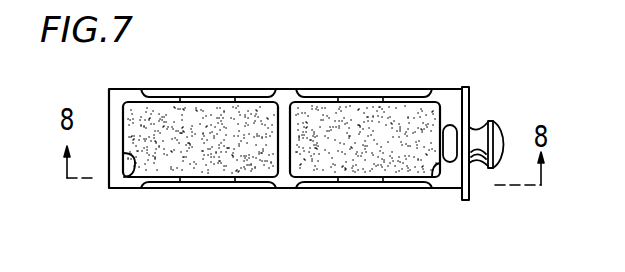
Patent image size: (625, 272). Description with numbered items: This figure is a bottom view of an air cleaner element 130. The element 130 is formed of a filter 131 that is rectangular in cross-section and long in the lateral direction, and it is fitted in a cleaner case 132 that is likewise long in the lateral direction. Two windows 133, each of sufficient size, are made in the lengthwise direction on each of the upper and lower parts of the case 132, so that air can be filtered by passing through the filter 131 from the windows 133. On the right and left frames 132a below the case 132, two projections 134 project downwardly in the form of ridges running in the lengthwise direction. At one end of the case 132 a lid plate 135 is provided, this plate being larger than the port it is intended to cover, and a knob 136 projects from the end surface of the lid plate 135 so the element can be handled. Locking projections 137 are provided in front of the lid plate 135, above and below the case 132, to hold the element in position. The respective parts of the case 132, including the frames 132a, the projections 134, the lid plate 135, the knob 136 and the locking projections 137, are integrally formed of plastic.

The element 130 is at (212, 150).
The filter 131 is at (352, 158).
The cleaner case 132 is at (284, 185).
The right and left frames 132a is at (250, 100).
The windows 133 is at (128, 165).
The projections 134 is at (200, 100).
The lid plate 135 is at (467, 100).
The knob 136 is at (498, 142).
The locking projections 137 is at (451, 125).